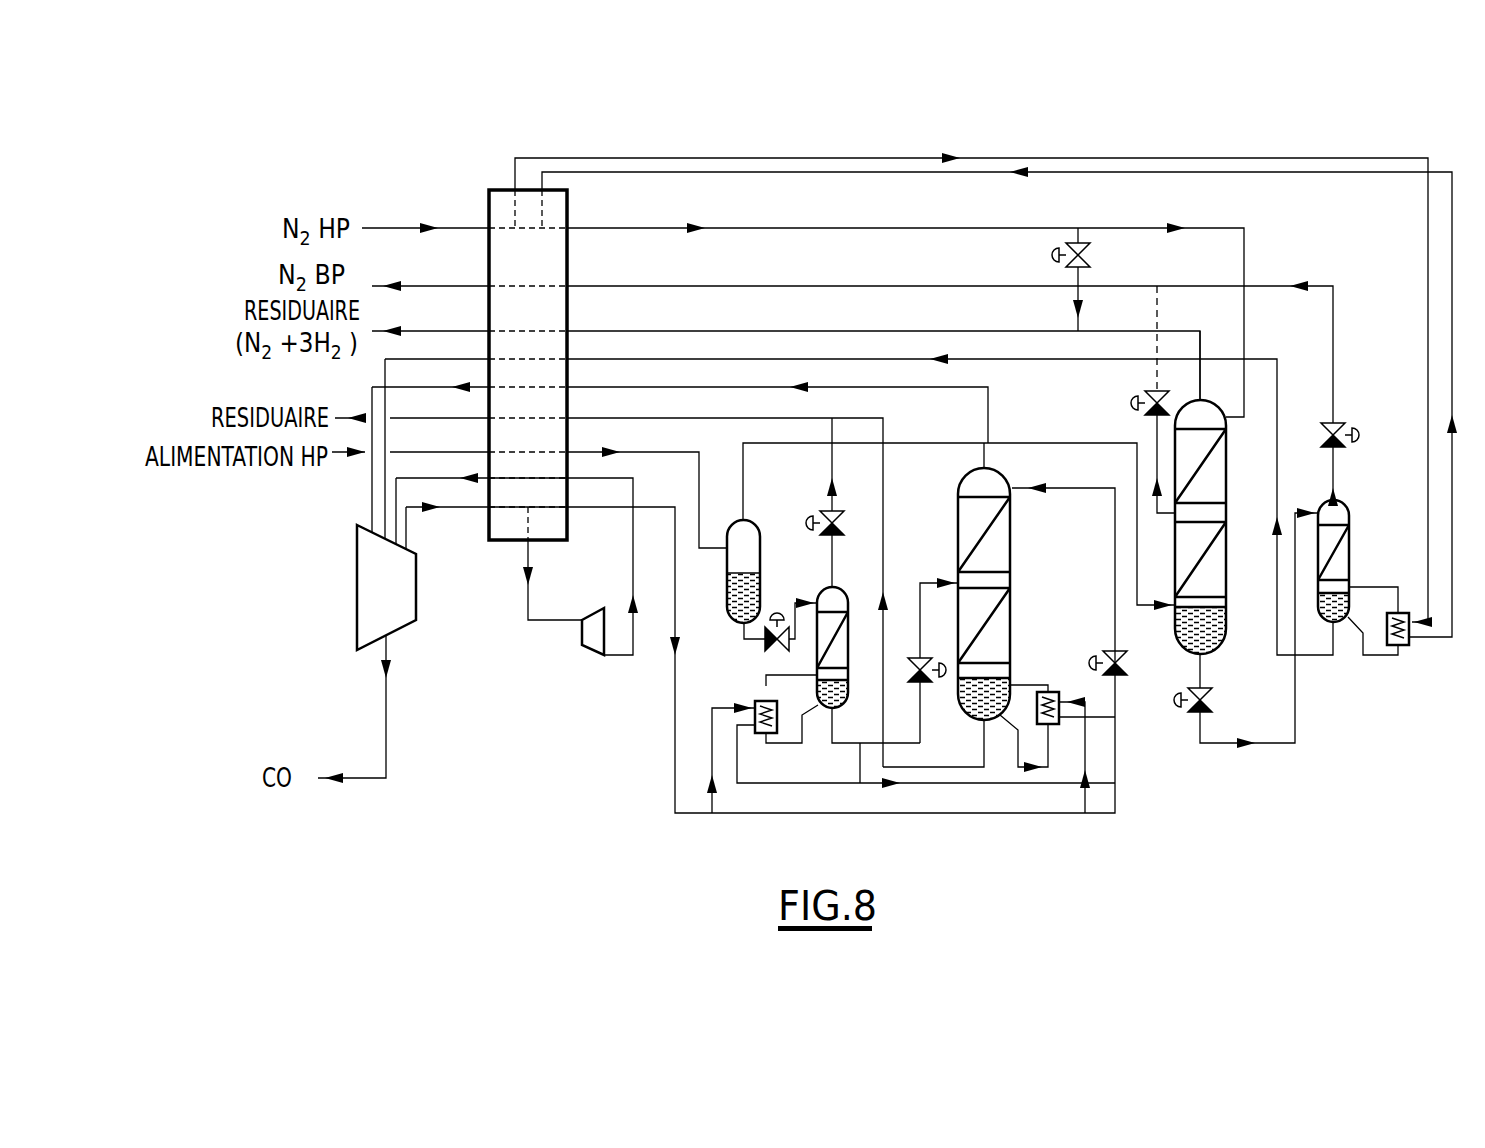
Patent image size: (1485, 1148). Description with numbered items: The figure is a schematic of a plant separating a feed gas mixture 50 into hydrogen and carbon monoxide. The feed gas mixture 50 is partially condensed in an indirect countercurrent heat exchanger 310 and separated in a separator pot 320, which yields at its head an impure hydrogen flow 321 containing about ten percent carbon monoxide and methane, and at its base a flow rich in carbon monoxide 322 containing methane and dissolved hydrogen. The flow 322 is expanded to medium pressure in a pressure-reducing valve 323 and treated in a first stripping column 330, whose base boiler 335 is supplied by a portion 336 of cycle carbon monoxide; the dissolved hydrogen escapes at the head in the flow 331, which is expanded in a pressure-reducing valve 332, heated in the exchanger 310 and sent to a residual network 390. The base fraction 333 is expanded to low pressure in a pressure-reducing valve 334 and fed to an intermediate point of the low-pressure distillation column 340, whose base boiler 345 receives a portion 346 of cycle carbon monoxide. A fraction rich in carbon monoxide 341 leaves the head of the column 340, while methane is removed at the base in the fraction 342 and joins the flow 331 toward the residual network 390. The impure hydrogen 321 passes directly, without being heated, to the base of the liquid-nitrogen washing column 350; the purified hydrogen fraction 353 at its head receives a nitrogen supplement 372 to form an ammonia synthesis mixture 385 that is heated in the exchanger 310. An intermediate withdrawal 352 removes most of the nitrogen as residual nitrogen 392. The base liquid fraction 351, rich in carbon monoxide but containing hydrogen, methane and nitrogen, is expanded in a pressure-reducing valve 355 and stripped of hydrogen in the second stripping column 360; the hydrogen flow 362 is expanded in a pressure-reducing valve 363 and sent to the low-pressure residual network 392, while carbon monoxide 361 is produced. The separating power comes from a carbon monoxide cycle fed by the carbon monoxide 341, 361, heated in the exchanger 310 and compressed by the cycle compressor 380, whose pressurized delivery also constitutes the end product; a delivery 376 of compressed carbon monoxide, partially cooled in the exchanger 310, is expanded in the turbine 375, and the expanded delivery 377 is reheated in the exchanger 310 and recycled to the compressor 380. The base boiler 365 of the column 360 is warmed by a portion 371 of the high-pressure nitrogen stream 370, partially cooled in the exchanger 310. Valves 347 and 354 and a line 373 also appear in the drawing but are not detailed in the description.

The feed gas mixture 50 is at (332, 456).
The heat exchanger 310 is at (507, 187).
The separator pot 320 is at (760, 596).
The impure hydrogen flow 321 is at (743, 468).
The flow rich in carbon monoxide 322 is at (744, 632).
The pressure-reducing valve 323 is at (767, 640).
The first stripping column 330 is at (815, 666).
The head flow of stripping column 331 is at (834, 585).
The pressure-reducing valve 332 is at (836, 530).
The base fraction of first stripping column 333 is at (860, 753).
The pressure-reducing valve 334 is at (920, 685).
The base boiler 335 is at (770, 745).
The portion of cycle carbon monoxide 336 is at (712, 740).
The distillation column 340 is at (1013, 637).
The fraction rich in carbon monoxide 341 is at (987, 452).
The base fraction of distillation column 342 is at (925, 767).
The base boiler 345 is at (1018, 685).
The portion of cycle carbon monoxide 346 is at (1082, 798).
The valve 347 is at (1120, 672).
The liquid-nitrogen washing column 350 is at (1227, 573).
The liquid fraction collected at the base 351 is at (1203, 668).
The intermediate withdrawal 352 is at (1153, 430).
The purified hydrogen fraction 353 is at (1202, 348).
The valve 354 is at (1153, 394).
The pressure-reducing valve 355 is at (1206, 702).
The second stripping column 360 is at (1350, 570).
The carbon monoxide from second stripping column 361 is at (1303, 658).
The hydrogen flow 362 is at (1333, 467).
The pressure-reducing valve 363 is at (1333, 422).
The base boiler 365 is at (1380, 658).
The high-pressure nitrogen stream 370 is at (468, 227).
The portion of high-pressure nitrogen stream 371 is at (590, 158).
The nitrogen supplement 372 is at (1080, 236).
The nitrogen line 373 is at (1080, 268).
The turbo expander 375 is at (592, 655).
The delivery of compressed carbon monoxide 376 is at (520, 552).
The pressure-reduced delivery 377 is at (632, 610).
The cycle compressor 380 is at (357, 568).
The ammonia synthesis mixture 385 is at (650, 331).
The residual network 390 is at (396, 422).
The residual nitrogen network 392 is at (402, 285).